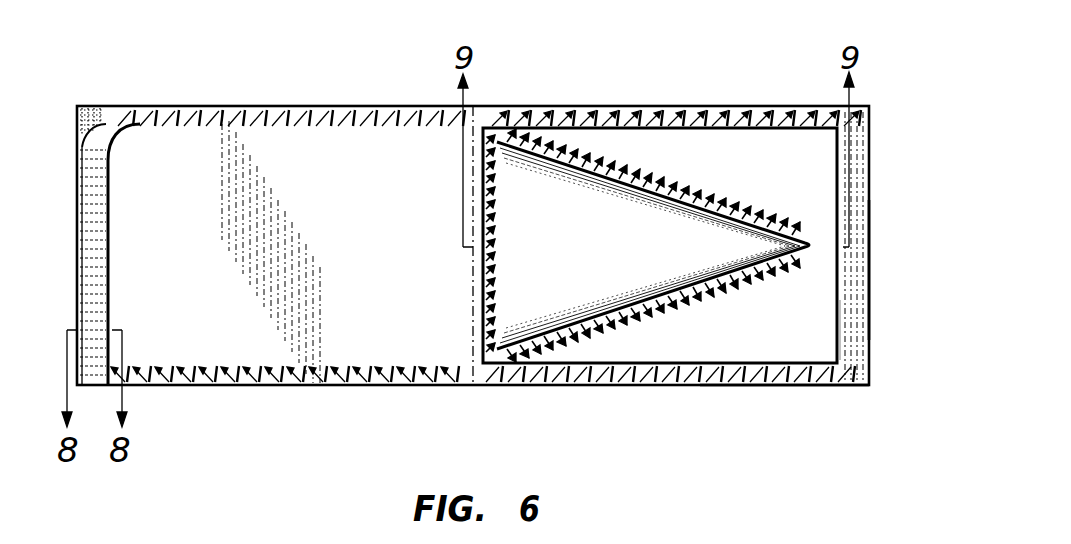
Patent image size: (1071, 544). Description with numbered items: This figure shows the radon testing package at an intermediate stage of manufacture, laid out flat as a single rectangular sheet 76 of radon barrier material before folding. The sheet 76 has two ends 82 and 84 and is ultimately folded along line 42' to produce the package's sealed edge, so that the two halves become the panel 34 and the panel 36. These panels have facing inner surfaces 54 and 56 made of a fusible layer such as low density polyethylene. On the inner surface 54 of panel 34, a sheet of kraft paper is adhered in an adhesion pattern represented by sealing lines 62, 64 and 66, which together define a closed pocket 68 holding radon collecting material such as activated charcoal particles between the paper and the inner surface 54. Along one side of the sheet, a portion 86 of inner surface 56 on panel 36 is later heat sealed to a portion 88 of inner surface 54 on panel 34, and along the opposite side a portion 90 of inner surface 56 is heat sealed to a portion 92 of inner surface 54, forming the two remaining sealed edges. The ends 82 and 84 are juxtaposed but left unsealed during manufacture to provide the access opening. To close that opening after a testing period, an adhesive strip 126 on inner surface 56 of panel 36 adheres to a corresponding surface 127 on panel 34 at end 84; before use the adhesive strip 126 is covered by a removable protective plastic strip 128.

The panel 34 is at (855, 368).
The panel 36 is at (360, 350).
The fold line 42' is at (616, 245).
The inner surface 54 is at (853, 320).
The inner surface 56 is at (382, 211).
The sealing line 62 is at (665, 170).
The sealing line 64 is at (713, 305).
The sealing line 66 is at (500, 285).
The closed pocket 68 is at (577, 203).
The single rectangular sheet 76 is at (368, 106).
The end 82 is at (78, 146).
The end 84 is at (870, 190).
The portion of inner surface 56 86 is at (300, 106).
The portion of inner surface 54 88 is at (726, 118).
The portion of inner surface 56 90 is at (200, 385).
The portion of inner surface 54 92 is at (620, 388).
The adhesive strip 126 is at (90, 114).
The corresponding surface 127 is at (869, 275).
The removable protective plastic strip 128 is at (106, 142).